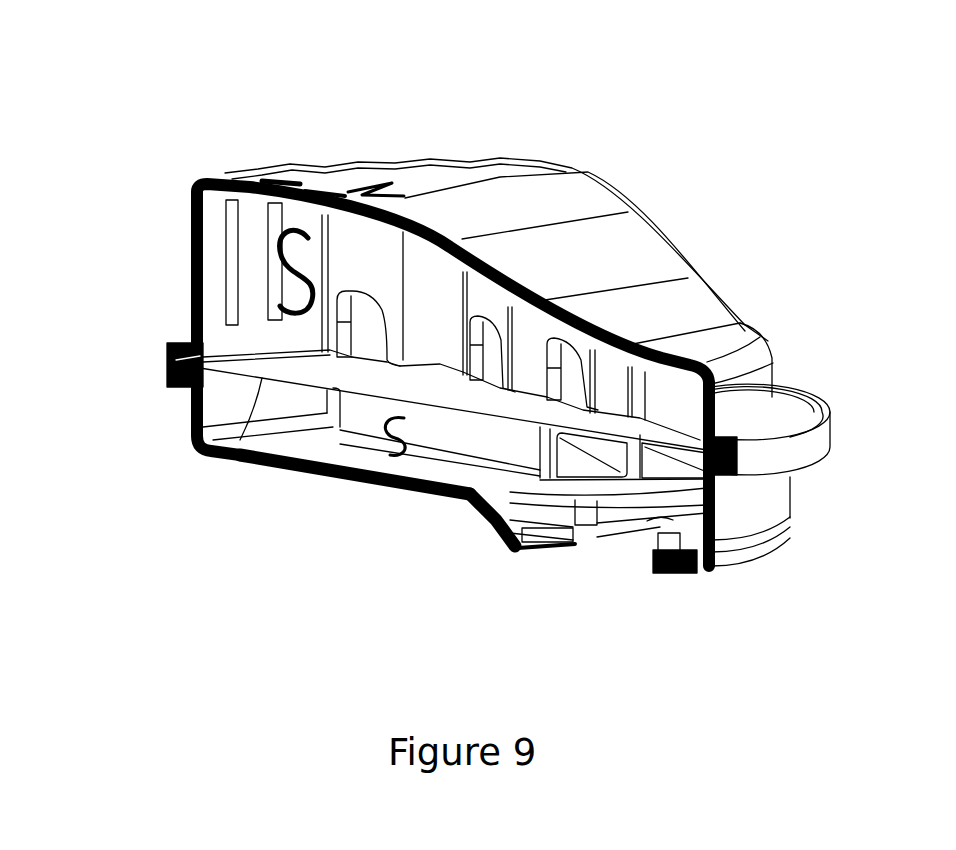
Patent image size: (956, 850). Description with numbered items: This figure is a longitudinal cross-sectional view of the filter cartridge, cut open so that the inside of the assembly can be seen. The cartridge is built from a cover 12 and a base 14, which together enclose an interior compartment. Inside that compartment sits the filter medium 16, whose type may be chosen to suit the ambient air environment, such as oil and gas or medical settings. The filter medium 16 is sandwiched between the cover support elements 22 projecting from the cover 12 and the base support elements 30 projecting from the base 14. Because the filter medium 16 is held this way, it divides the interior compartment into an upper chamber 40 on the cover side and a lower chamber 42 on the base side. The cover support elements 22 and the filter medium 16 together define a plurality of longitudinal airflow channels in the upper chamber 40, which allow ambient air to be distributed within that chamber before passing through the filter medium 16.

The cover 12 is at (527, 190).
The cover support elements 22 is at (374, 273).
The upper chamber 40 is at (282, 268).
The filter medium 16 is at (222, 465).
The base 14 is at (280, 447).
The lower chamber 42 is at (370, 450).
The base support elements 30 is at (500, 447).